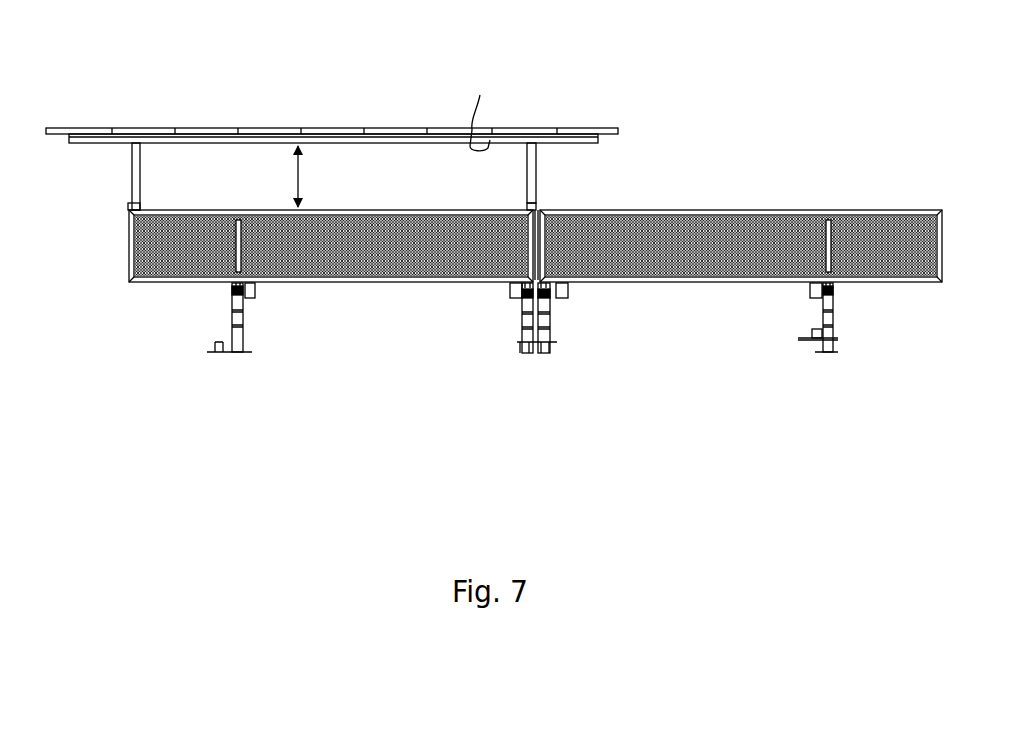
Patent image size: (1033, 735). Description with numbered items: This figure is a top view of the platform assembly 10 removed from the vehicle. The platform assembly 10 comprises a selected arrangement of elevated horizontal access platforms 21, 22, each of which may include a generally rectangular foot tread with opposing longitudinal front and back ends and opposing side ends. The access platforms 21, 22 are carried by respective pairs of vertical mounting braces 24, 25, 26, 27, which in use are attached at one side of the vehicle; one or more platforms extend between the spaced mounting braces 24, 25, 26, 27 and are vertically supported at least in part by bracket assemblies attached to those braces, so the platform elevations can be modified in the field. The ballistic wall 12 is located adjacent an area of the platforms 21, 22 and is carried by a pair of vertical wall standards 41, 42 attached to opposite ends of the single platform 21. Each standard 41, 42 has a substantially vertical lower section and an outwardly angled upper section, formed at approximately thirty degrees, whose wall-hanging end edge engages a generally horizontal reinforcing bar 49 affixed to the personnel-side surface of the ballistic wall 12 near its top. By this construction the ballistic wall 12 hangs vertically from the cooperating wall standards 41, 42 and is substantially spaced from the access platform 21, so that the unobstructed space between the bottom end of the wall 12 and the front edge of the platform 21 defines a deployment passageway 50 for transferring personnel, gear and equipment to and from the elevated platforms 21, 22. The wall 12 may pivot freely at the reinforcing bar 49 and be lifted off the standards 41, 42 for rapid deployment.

The platform assembly 10 is at (656, 138).
The ballistic wall 12 is at (365, 128).
The access platform 21 is at (402, 212).
The access platform 22 is at (738, 210).
The vertical mounting brace 24 is at (243, 331).
The vertical mounting brace 25 is at (522, 324).
The vertical mounting brace 26 is at (550, 323).
The vertical mounting brace 27 is at (834, 314).
The vertical wall standard 41 is at (142, 168).
The vertical wall standard 42 is at (538, 172).
The reinforcing bar 49 is at (479, 107).
The deployment passageway 50 is at (294, 180).